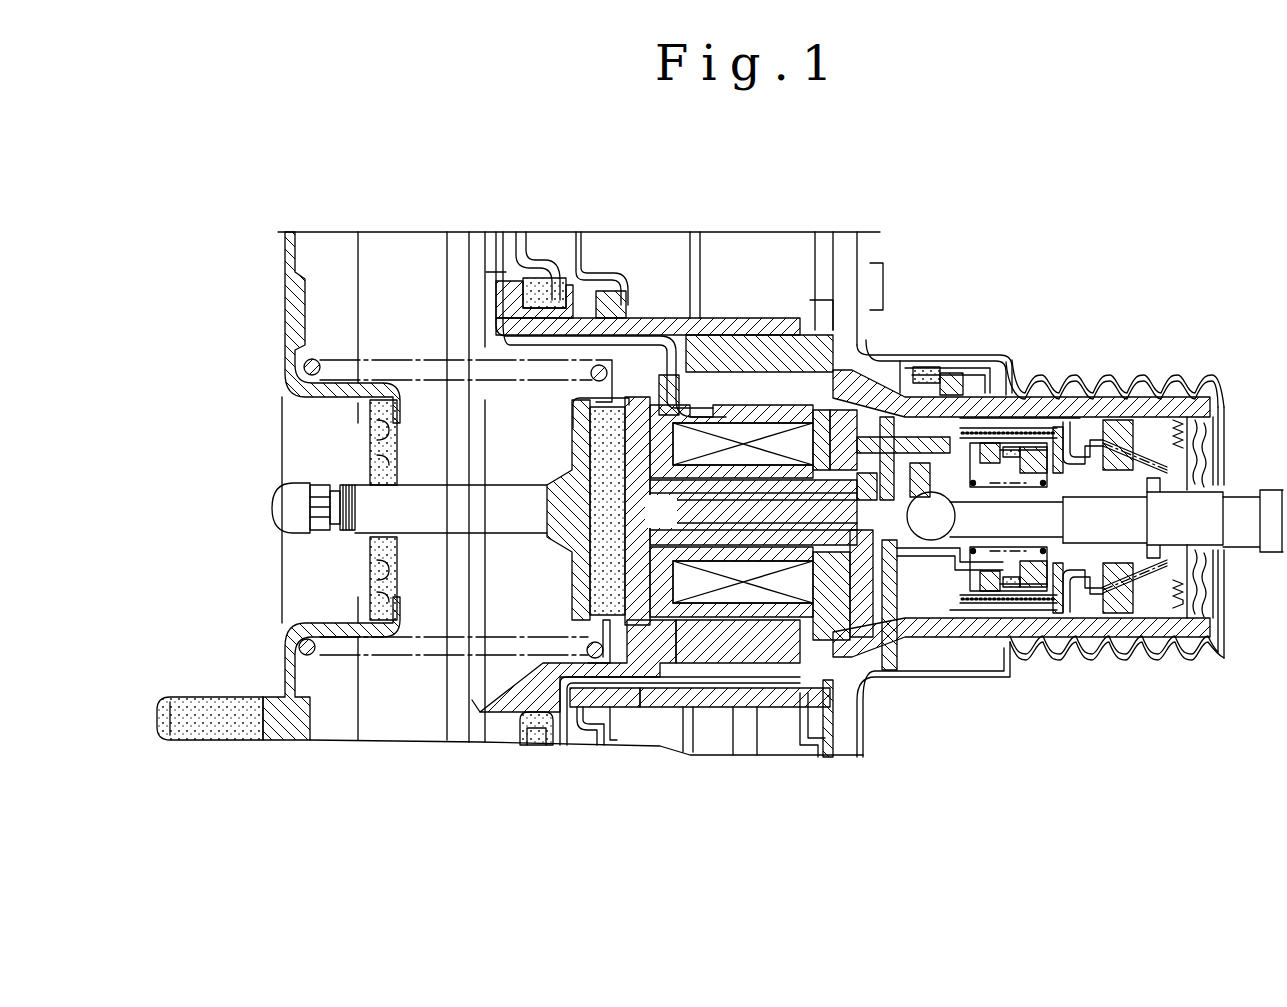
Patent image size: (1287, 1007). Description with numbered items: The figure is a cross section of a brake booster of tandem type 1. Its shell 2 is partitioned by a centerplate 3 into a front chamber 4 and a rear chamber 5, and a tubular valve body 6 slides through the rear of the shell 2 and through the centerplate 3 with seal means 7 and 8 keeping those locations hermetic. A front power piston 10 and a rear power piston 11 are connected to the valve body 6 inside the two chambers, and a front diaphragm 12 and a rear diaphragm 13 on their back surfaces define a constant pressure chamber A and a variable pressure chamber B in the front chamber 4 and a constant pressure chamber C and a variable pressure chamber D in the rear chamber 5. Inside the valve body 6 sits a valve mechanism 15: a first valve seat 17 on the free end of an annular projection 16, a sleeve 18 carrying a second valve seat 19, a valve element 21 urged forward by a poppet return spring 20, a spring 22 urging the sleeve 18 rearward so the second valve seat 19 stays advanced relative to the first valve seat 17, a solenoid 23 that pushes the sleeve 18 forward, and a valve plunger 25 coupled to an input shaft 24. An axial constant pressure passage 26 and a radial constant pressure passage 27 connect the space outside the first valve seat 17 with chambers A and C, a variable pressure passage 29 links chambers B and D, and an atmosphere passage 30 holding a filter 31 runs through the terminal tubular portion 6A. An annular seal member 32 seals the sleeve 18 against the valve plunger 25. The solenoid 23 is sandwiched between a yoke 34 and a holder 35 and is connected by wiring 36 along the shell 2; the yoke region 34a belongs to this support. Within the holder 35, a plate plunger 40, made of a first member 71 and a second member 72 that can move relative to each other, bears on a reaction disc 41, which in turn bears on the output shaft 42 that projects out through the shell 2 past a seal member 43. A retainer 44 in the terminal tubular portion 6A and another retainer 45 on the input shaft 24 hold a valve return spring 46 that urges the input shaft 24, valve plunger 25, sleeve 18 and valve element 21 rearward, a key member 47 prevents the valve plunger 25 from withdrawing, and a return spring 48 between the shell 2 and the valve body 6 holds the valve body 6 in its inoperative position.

The brake booster of tandem type 1 is at (547, 228).
The shell 2 is at (284, 285).
The centerplate 3 is at (558, 747).
The front chamber 4 is at (365, 728).
The rear chamber 5 is at (672, 737).
The tubular valve body 6 is at (493, 727).
The terminal tubular portion 6A is at (1200, 375).
The seal means 7 is at (604, 729).
The seal means 8 is at (963, 652).
The front power piston 10 is at (518, 749).
The rear power piston 11 is at (793, 739).
The front diaphragm 12 is at (547, 754).
The rear diaphragm 13 is at (810, 749).
The valve mechanism 15 is at (1023, 662).
The annular projection 16 is at (940, 440).
The first valve seat 17 is at (935, 655).
The sleeve 18 is at (970, 652).
The second valve seat 19 is at (1083, 659).
The poppet return spring 20 is at (1085, 396).
The valve element 21 is at (1097, 663).
The spring 22 is at (1062, 664).
The solenoid 23 is at (752, 420).
The input shaft 24 is at (1270, 552).
The valve plunger 25 is at (687, 709).
The constant pressure passage 26 is at (877, 420).
The constant pressure passage 27 is at (790, 328).
The variable pressure passage 29 is at (637, 695).
The atmosphere passage 30 is at (1186, 662).
The filter 31 is at (1216, 654).
The annular seal member 32 is at (1020, 560).
The yoke 34 is at (845, 332).
The end plate 34a is at (915, 487).
The holder 35 is at (636, 410).
The wiring 36 is at (487, 322).
The plate plunger 40 is at (570, 480).
The reaction disc 41 is at (607, 579).
The output shaft 42 is at (285, 517).
The seal member 43 is at (368, 449).
The retainer 44 is at (1113, 467).
The retainer 45 is at (1170, 485).
The valve return spring 46 is at (1163, 410).
The key member 47 is at (883, 682).
The return spring 48 is at (405, 358).
The first member 71 is at (676, 527).
The second member 72 is at (627, 484).
The constant pressure chamber A is at (328, 728).
The variable pressure chamber B is at (553, 754).
The constant pressure chamber C is at (715, 747).
The variable pressure chamber D is at (838, 752).